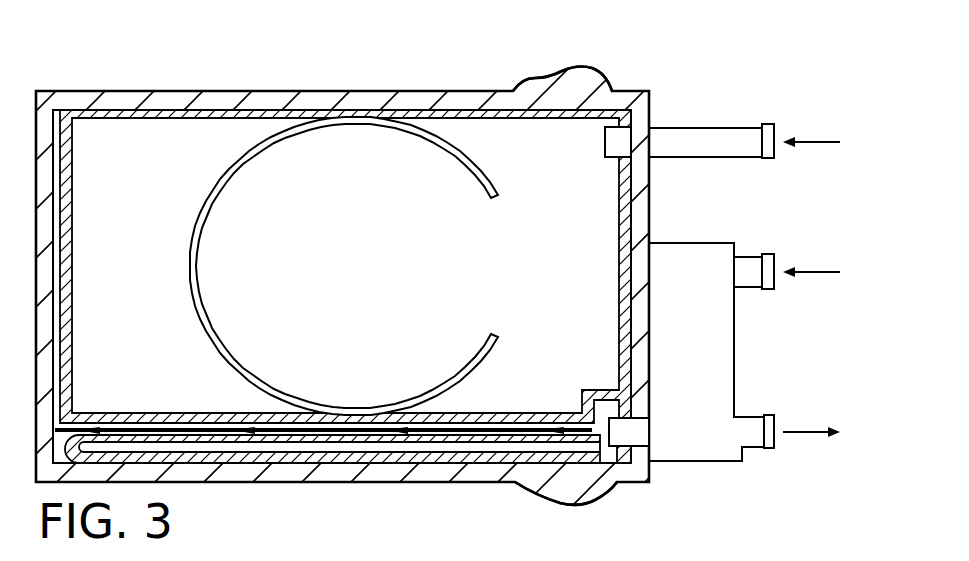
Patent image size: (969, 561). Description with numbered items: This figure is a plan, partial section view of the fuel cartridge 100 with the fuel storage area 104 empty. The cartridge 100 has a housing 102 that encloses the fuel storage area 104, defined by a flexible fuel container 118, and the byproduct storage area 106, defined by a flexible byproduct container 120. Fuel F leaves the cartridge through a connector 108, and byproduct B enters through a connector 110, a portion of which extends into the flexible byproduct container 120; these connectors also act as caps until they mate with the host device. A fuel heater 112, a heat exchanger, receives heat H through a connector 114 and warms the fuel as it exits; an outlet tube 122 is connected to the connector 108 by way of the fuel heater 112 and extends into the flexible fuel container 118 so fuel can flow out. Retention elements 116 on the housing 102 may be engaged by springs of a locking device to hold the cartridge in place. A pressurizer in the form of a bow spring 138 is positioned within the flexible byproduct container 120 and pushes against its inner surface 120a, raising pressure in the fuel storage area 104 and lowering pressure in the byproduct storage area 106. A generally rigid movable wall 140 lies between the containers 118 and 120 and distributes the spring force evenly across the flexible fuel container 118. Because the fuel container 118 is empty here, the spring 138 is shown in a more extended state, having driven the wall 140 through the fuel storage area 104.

The fuel cartridge 100 is at (106, 62).
The housing 102 is at (227, 90).
The fuel storage area 104 is at (205, 455).
The byproduct storage area 106 is at (372, 256).
The connector 108 is at (748, 415).
The connector 110 is at (747, 126).
The fuel heater 112 is at (692, 463).
The connector 114 is at (746, 257).
The retention elements 116 is at (587, 68).
The flexible fuel container 118 is at (288, 462).
The flexible byproduct container 120 is at (80, 200).
The inner surface 120a is at (212, 118).
The outlet tube 122 is at (652, 433).
The spring 138 is at (465, 180).
The movable wall 140 is at (110, 414).